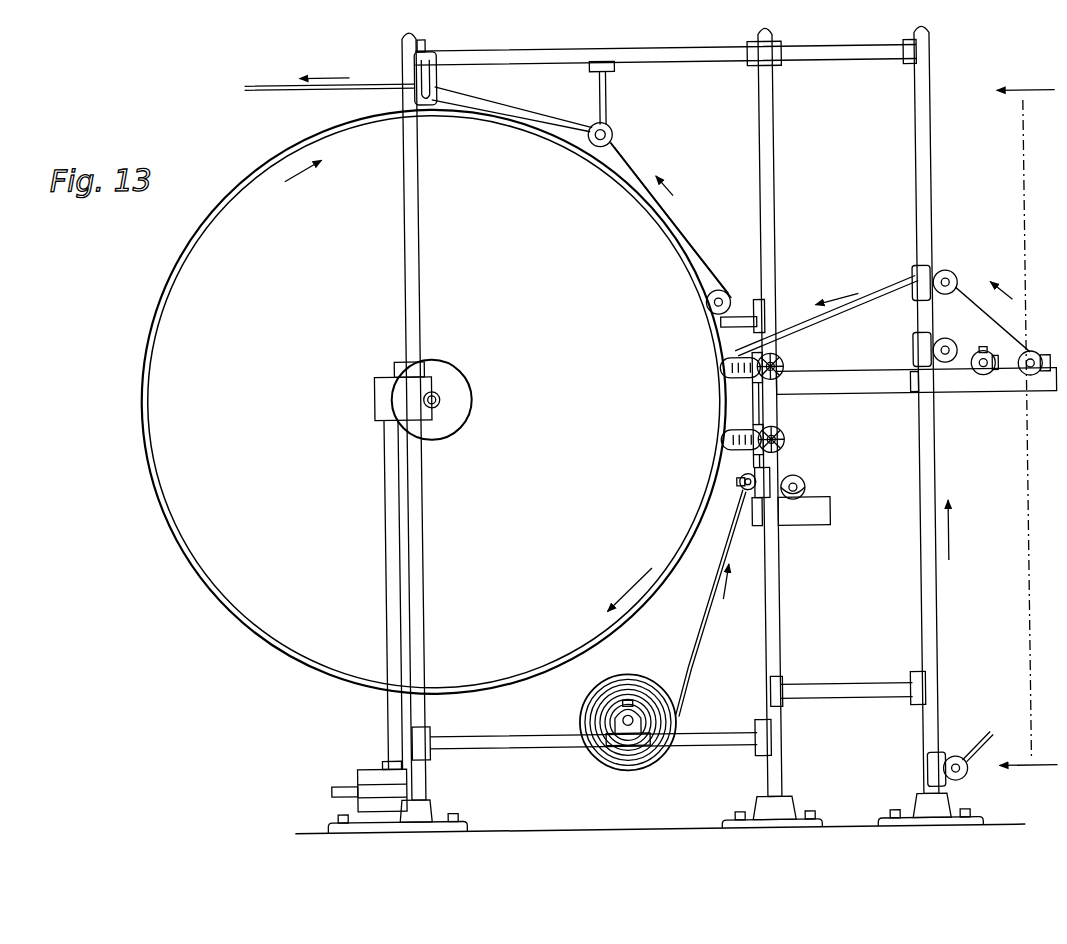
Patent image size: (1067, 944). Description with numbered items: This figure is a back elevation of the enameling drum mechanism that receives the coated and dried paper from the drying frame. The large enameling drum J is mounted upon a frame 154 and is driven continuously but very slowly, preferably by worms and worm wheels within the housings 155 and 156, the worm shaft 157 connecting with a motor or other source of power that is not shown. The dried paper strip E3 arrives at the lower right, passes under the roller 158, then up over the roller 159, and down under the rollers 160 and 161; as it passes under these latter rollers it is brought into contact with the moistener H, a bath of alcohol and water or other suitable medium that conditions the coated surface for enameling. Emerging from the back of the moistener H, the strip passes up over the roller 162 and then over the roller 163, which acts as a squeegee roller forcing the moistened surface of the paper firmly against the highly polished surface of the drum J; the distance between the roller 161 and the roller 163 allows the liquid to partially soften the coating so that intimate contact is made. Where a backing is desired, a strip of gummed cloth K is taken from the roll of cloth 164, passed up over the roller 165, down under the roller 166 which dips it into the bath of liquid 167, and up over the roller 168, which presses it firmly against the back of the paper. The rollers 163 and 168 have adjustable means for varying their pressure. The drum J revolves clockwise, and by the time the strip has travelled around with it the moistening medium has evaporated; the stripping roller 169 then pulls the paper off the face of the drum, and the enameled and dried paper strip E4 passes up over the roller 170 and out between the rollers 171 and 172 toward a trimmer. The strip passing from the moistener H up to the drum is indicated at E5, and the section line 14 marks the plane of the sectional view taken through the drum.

The section line 14 is at (1027, 431).
The frame 154 is at (913, 577).
The housing 155 is at (400, 394).
The housing 156 is at (366, 766).
The worm shaft 157 is at (335, 782).
The roller 158 is at (948, 786).
The roller 159 is at (949, 346).
The roller 160 is at (991, 380).
The roller 161 is at (1047, 384).
The roller 162 is at (958, 296).
The squeegee roller 163 is at (726, 361).
The roll of cloth 164 is at (663, 674).
The roller 165 is at (739, 481).
The roller 166 is at (805, 488).
The bath of liquid 167 is at (831, 512).
The roller 168 is at (726, 431).
The stripping roller 169 is at (707, 304).
The roller 170 is at (618, 138).
The roller 171 is at (452, 100).
The roller 172 is at (442, 66).
The enameling drum J is at (434, 402).
The strip of cloth K is at (709, 647).
The moistener H is at (1001, 384).
The dried paper strip E3 is at (936, 712).
The enameled paper strip E4 is at (702, 245).
The band E5 is at (882, 315).